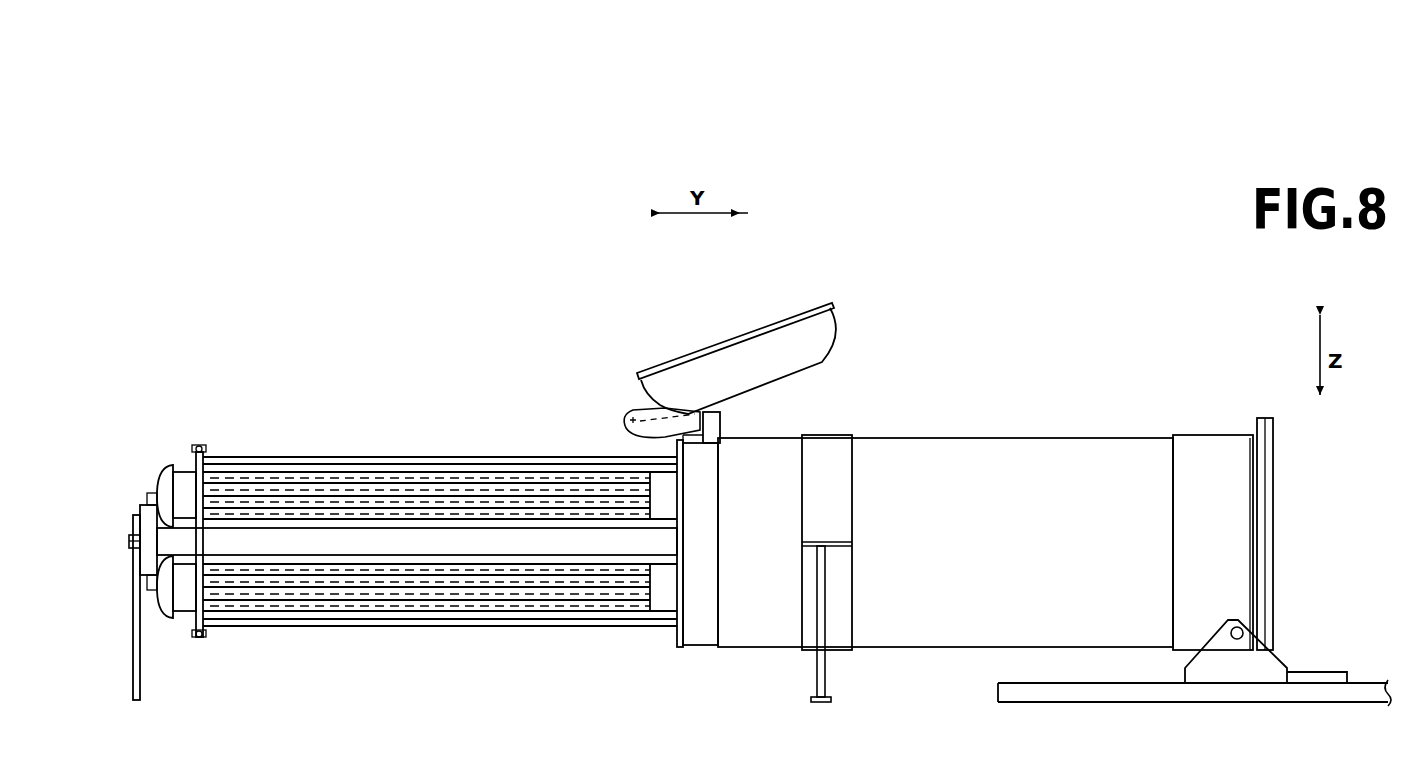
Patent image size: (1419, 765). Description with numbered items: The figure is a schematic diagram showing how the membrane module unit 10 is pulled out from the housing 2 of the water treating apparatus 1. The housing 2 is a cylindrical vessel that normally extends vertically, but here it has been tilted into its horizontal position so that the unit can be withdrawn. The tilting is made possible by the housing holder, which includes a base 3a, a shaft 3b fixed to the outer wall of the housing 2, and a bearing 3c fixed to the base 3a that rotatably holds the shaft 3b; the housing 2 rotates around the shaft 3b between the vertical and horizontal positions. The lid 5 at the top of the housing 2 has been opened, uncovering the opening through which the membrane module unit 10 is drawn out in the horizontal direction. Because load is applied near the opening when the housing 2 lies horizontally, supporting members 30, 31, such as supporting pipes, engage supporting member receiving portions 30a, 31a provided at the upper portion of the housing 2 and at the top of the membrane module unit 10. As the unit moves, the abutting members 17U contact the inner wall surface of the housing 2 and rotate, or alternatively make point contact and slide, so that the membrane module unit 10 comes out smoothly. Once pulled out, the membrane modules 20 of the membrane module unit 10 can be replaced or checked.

The water treating apparatus 1 is at (1011, 294).
The housing 2 is at (1075, 444).
The base 3a is at (1373, 687).
The shaft 3b is at (1238, 622).
The bearing 3c is at (1263, 658).
The lid 5 is at (762, 342).
The membrane module unit 10 is at (390, 432).
The abutting member 17U is at (200, 444).
The membrane modules 20 is at (472, 473).
The supporting member 30 is at (822, 685).
The supporting member receiving portion 30a is at (840, 538).
The supporting member 31 is at (133, 688).
The supporting member receiving portion 31a is at (130, 540).